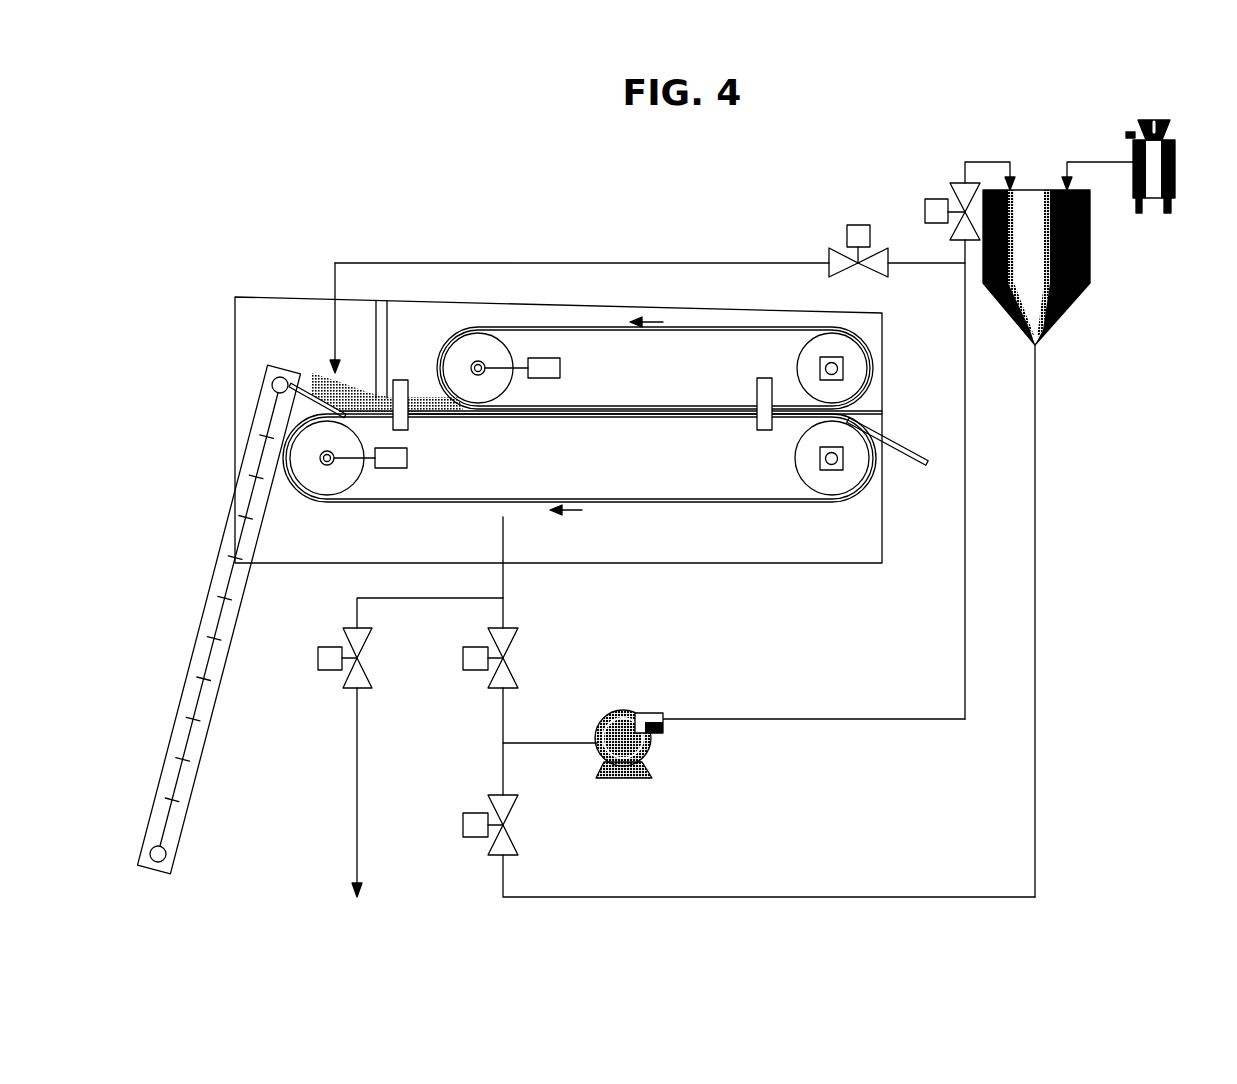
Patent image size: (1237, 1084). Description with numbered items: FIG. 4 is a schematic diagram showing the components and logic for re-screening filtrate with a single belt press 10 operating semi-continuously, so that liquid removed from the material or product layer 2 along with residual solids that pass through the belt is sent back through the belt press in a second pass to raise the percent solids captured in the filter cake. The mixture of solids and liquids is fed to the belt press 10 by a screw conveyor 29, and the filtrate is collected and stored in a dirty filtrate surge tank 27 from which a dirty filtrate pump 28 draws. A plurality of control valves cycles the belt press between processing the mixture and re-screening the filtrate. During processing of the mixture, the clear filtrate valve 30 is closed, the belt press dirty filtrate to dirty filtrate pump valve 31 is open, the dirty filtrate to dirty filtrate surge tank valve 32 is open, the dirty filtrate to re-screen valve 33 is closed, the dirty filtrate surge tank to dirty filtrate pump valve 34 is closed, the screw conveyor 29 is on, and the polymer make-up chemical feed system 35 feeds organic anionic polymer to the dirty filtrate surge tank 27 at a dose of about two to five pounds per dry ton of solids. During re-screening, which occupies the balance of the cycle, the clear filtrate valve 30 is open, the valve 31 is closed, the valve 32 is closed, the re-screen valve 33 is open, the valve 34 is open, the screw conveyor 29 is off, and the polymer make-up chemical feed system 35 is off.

The belt press 10 is at (258, 297).
The material / product layer 2 is at (332, 378).
The dirty filtrate surge tank 27 is at (1095, 266).
The dirty filtrate pump 28 is at (630, 782).
The screw conveyor 29 is at (205, 748).
The clear filtrate valve 30 is at (318, 655).
The belt press dirty filtrate to dirty filtrate pump valve 31 is at (463, 658).
The dirty filtrate to dirty filtrate surge tank valve 32 is at (925, 210).
The dirty filtrate to re-screen valve 33 is at (858, 225).
The dirty filtrate surge tank to dirty filtrate pump valve 34 is at (463, 822).
The polymer make-up chemical feed system 35 is at (1180, 168).